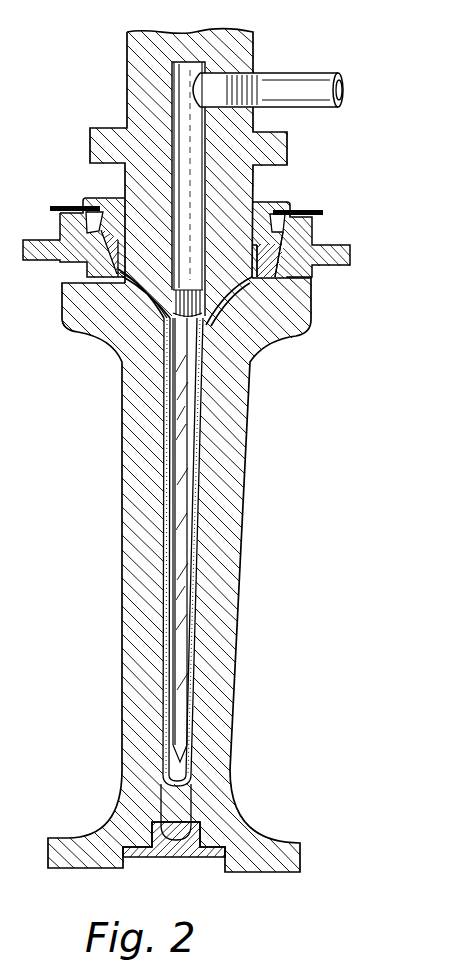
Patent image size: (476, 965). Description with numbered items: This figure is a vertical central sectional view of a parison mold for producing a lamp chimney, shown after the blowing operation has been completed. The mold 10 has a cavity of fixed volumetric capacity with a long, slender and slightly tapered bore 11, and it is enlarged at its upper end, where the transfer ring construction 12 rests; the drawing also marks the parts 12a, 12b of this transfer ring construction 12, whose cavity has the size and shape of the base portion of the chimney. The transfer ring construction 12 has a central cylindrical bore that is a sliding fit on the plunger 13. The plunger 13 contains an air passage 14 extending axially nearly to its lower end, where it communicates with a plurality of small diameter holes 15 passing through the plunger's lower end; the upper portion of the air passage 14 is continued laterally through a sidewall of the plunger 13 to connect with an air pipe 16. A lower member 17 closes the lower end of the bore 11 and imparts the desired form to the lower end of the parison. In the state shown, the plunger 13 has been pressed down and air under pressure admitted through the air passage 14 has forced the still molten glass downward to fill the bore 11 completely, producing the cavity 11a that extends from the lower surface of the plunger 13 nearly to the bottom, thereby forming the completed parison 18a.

The mold 10 is at (232, 423).
The bore 11 is at (197, 612).
The cavity 11a is at (177, 737).
The transfer ring construction 12 is at (357, 222).
The inner sleeve of ring 12a is at (312, 274).
The outer ring 12b is at (273, 247).
The plunger 13 is at (236, 186).
The air passage 14 is at (176, 115).
The small diameter holes 15 is at (173, 314).
The air pipe 16 is at (290, 83).
The lower member 17 is at (178, 856).
The completed parison 18a is at (197, 656).